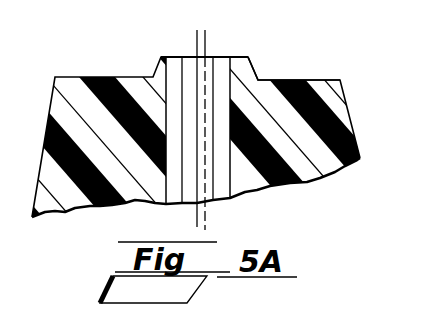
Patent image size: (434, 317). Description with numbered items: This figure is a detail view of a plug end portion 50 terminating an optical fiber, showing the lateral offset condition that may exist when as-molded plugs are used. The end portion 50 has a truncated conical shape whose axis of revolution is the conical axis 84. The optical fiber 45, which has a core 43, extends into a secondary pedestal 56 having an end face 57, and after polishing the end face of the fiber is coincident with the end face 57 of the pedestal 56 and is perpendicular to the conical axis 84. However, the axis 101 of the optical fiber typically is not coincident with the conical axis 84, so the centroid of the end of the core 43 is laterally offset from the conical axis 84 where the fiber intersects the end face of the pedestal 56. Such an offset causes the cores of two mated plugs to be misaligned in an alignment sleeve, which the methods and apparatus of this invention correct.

The end portion 50 is at (342, 107).
The secondary pedestal 56 is at (262, 72).
The end face 57 is at (160, 55).
The axis of the optical fiber 101 is at (198, 42).
The conical axis 84 is at (214, 44).
The optical fiber 45 is at (230, 173).
The core 43 is at (183, 200).